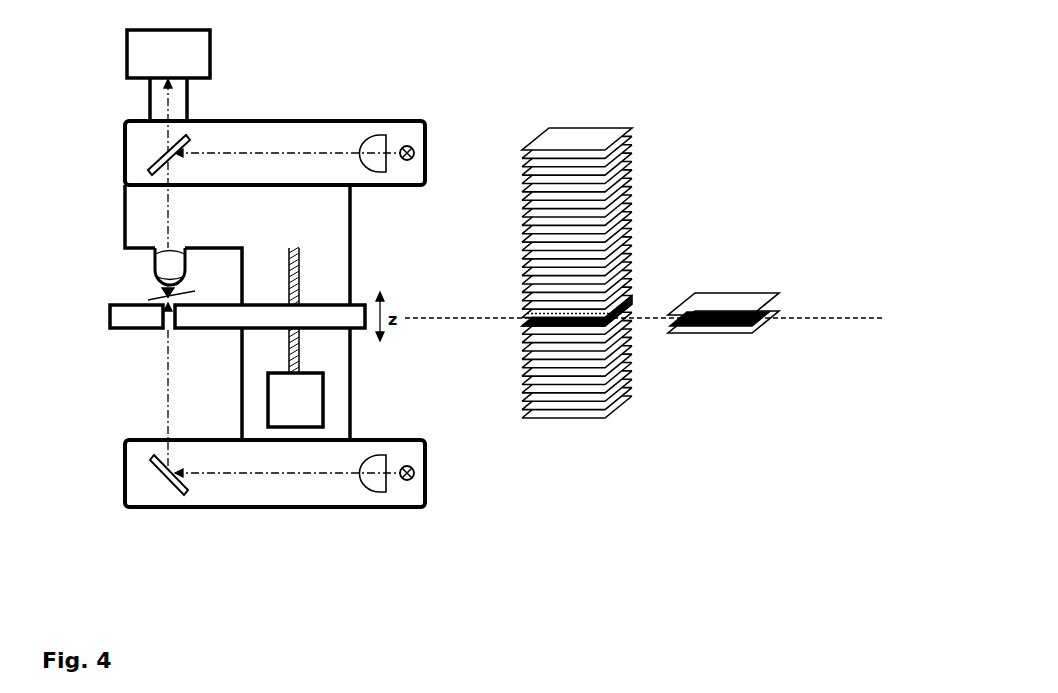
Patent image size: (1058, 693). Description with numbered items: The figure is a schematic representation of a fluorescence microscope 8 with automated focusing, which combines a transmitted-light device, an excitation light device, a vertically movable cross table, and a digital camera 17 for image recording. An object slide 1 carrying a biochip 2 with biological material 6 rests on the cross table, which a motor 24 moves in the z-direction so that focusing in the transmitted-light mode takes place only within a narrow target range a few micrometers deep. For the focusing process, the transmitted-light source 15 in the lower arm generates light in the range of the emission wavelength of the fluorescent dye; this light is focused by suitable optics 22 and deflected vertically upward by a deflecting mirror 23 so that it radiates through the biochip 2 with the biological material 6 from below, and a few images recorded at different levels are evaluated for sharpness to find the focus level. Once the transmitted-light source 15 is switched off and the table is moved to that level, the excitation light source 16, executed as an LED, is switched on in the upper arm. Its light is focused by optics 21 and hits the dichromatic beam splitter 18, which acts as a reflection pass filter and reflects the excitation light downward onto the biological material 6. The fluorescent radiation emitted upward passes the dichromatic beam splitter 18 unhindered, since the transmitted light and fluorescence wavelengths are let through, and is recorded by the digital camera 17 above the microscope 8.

The object slide 1 is at (150, 300).
The biochip 2 is at (173, 297).
The biological material 6 is at (170, 295).
The fluorescence microscope 8 is at (415, 97).
The transmitted-light source 15 is at (415, 473).
The excitation light source 16 is at (415, 151).
The digital camera 17 is at (175, 60).
The dichromatic beam splitter 18 is at (167, 145).
The optics 21 is at (385, 167).
The optics 22 is at (382, 460).
The deflecting mirror 23 is at (182, 492).
The motor 24 is at (307, 405).